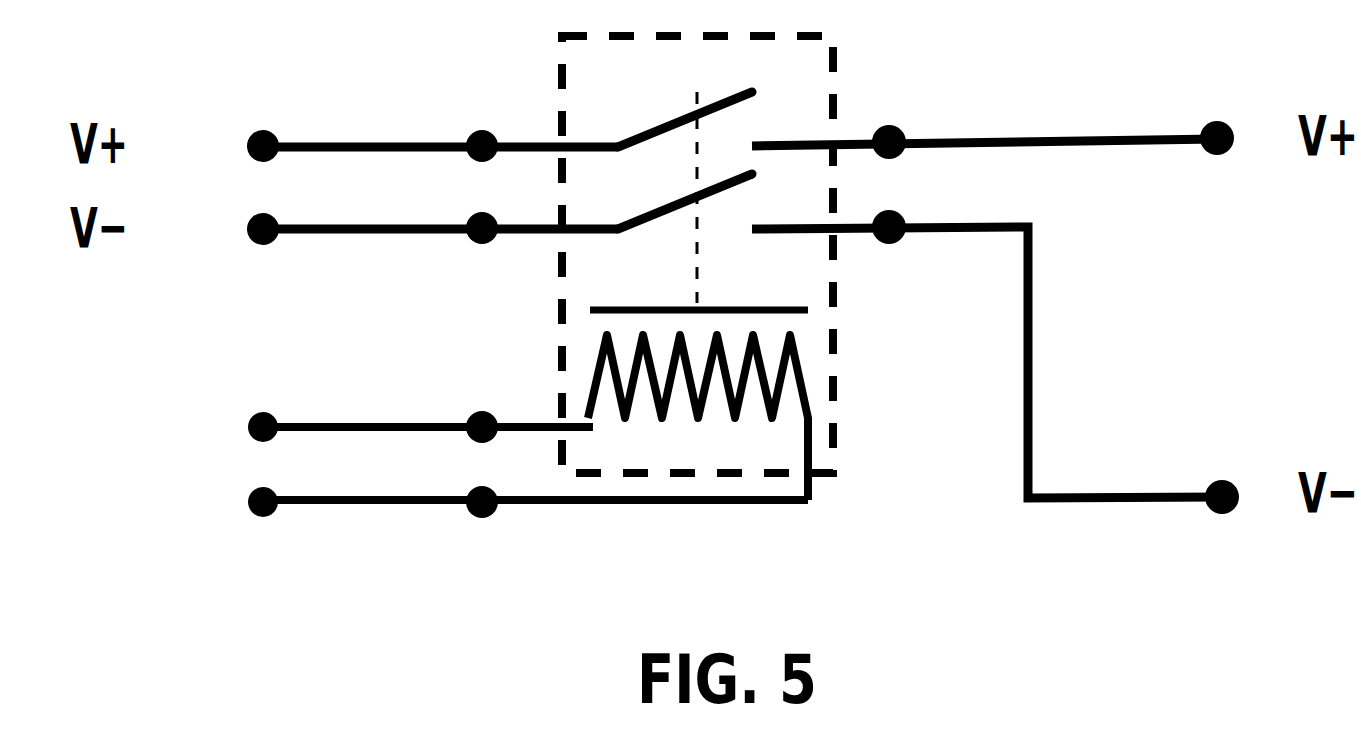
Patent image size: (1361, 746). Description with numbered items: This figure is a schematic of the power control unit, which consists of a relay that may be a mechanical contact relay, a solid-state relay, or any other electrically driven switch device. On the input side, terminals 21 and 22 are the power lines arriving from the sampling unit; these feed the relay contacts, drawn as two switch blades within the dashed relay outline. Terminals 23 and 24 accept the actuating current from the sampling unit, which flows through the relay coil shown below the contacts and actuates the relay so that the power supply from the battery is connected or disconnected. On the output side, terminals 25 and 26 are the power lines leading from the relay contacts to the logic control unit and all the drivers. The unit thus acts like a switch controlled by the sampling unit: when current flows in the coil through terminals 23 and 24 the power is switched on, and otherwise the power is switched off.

The terminal 21 is at (400, 145).
The terminal 22 is at (400, 230).
The terminal 23 is at (389, 421).
The terminal 24 is at (496, 502).
The terminal 25 is at (1016, 138).
The terminal 26 is at (1017, 362).